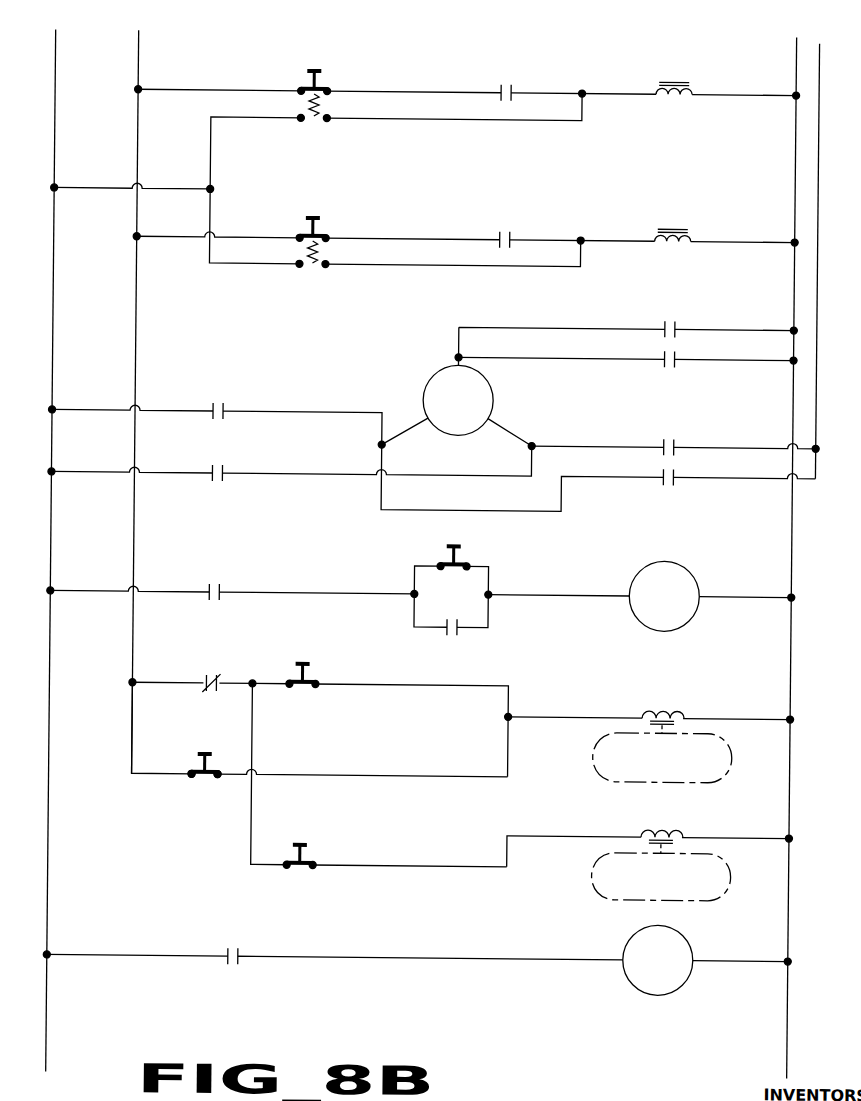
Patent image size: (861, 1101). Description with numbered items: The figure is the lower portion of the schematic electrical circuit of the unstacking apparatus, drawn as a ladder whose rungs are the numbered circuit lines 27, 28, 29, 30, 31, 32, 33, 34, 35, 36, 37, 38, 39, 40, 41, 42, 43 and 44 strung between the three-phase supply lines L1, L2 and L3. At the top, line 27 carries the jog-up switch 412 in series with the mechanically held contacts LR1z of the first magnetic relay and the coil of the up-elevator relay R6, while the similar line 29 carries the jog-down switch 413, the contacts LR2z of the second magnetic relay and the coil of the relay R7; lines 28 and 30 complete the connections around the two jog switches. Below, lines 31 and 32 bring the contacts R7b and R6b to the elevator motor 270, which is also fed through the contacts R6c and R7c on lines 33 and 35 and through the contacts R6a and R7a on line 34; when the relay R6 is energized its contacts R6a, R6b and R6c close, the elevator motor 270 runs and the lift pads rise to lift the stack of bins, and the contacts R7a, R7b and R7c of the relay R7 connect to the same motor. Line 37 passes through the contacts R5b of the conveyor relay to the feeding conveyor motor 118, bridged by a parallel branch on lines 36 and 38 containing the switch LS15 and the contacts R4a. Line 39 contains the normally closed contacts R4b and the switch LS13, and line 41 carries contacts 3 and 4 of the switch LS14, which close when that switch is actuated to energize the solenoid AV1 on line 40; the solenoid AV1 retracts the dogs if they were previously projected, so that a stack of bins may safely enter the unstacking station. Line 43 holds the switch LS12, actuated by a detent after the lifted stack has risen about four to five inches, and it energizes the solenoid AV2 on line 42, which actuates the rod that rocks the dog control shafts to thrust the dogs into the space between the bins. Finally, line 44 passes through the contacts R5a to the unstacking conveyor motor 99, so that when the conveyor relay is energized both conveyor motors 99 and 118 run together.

The line L1 is at (54, 48).
The line L2 is at (792, 56).
The line L3 is at (815, 42).
The line 27 is at (489, 94).
The rung 28 is at (526, 142).
The rung 29 is at (487, 241).
The rung 30 is at (525, 236).
The rung 31 is at (649, 343).
The line 32 is at (648, 360).
The line 33 is at (444, 428).
The line 34 is at (684, 450).
The rung 35 is at (444, 477).
The rung 36 is at (626, 579).
The line 37 is at (443, 594).
The line 38 is at (626, 616).
The line 39 is at (482, 729).
The rung 40 is at (671, 718).
The line 41 is at (484, 736).
The line 42 is at (671, 849).
The line 43 is at (544, 782).
The line 44 is at (439, 958).
The jog-up switch 412 is at (315, 84).
The jog-down switch 413 is at (316, 224).
The contacts LR1z is at (509, 81).
The contacts LR2z is at (510, 231).
The up-elevator relay R6 is at (689, 85).
The relay R7 is at (689, 230).
The contacts R7b is at (675, 319).
The contacts R6b is at (675, 365).
The elevator motor 270 is at (441, 410).
The contacts R6c is at (226, 405).
The contacts R7c is at (226, 467).
The contacts R6a is at (675, 437).
The contacts R7a is at (675, 487).
The contacts R5b is at (231, 588).
The switch LS15 is at (460, 555).
The contacts R4a is at (464, 635).
The feeding conveyor motor 118 is at (651, 604).
The contacts R4b is at (207, 678).
The switch LS13 is at (314, 677).
The switch LS14 is at (207, 767).
The contact 4 is at (190, 783).
The contact 3 is at (224, 784).
The solenoid AV1 is at (667, 702).
The solenoid AV2 is at (668, 821).
The switch LS12 is at (316, 855).
The contacts R5a is at (251, 948).
The unstacking conveyor motor 99 is at (650, 968).